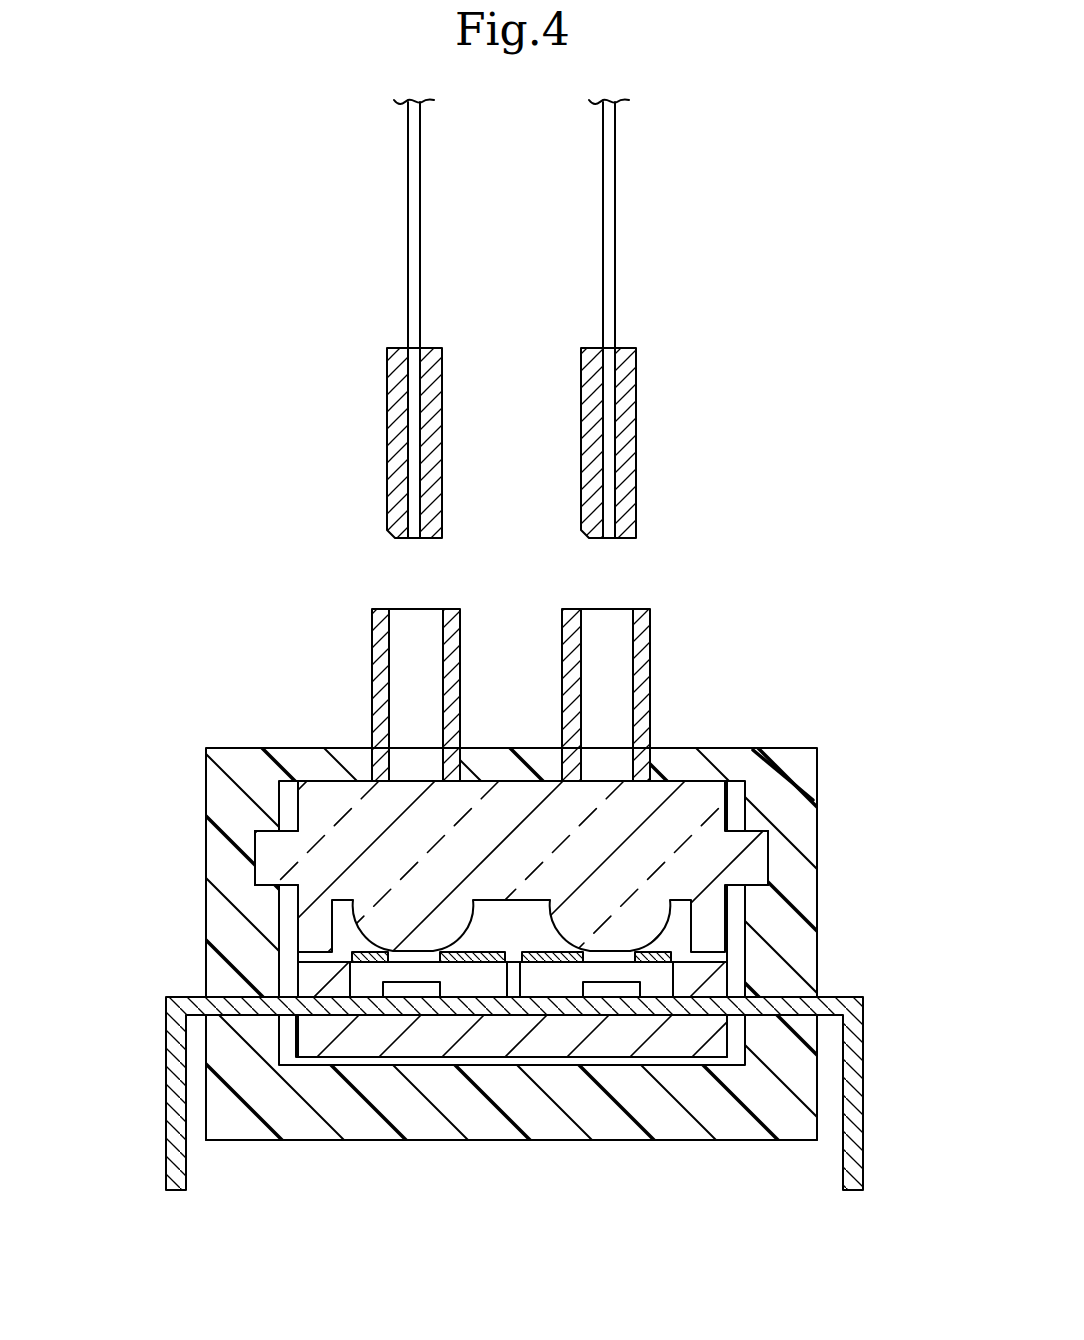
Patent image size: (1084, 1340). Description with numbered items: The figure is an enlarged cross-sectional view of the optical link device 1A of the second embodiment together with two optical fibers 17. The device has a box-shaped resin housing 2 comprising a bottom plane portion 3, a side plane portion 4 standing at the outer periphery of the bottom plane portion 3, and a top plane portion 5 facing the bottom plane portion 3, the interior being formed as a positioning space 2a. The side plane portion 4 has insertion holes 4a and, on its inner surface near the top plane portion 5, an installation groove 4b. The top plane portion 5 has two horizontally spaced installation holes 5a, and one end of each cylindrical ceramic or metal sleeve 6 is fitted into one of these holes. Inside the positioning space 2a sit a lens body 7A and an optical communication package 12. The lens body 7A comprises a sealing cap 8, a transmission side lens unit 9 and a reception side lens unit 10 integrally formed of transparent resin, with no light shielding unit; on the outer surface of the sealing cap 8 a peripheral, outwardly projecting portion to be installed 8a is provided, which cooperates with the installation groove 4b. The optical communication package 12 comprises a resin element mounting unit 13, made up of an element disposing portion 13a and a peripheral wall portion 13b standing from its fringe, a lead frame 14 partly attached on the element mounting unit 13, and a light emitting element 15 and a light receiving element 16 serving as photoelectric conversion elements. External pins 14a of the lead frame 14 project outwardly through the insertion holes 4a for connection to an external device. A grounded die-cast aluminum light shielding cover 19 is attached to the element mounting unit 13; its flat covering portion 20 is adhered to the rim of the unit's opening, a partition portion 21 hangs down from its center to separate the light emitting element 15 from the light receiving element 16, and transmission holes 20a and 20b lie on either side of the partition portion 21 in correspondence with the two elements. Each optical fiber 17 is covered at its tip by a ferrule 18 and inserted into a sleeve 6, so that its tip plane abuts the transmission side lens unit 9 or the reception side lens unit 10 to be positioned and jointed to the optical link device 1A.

The optical link device 1A is at (819, 571).
The housing 2 is at (798, 803).
The positioning space 2a is at (730, 785).
The bottom plane portion 3 is at (755, 1120).
The side plane portion 4 is at (788, 882).
The insertion hole 4a is at (228, 1002).
The installation groove 4b is at (255, 858).
The top plane portion 5 is at (688, 766).
The installation hole 5a is at (392, 765).
The sleeve 6 is at (372, 626).
The lens body 7A is at (485, 798).
The sealing cap 8 is at (318, 908).
The portion to be installed 8a is at (262, 882).
The transmission side lens unit 9 is at (375, 913).
The reception side lens unit 10 is at (633, 914).
The optical communication package 12 is at (500, 1045).
The element mounting unit 13 is at (315, 1045).
The element disposing portion 13a is at (420, 1045).
The peripheral wall portion 13b is at (718, 987).
The lead frame 14 is at (695, 1012).
The external pin 14a is at (175, 1067).
The light emitting element 15 is at (376, 985).
The light receiving element 16 is at (615, 988).
The optical fiber 17 is at (408, 164).
The ferrule 18 is at (405, 398).
The light shielding cover 19 is at (548, 1000).
The covering portion 20 is at (458, 966).
The transmission hole 20a is at (386, 960).
The transmission hole 20b is at (641, 958).
The partition portion 21 is at (517, 972).